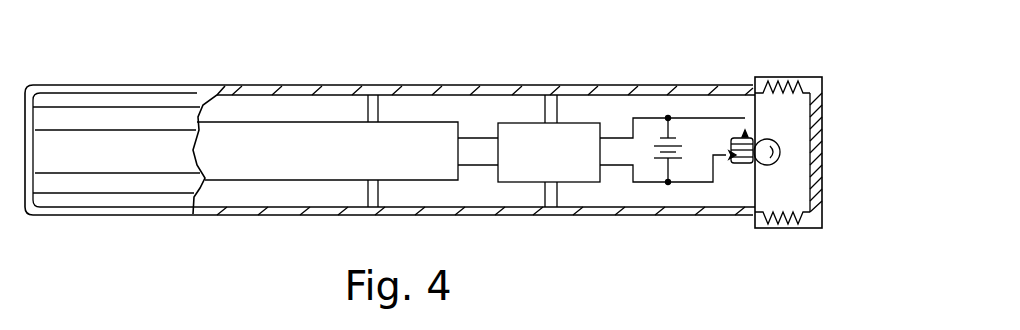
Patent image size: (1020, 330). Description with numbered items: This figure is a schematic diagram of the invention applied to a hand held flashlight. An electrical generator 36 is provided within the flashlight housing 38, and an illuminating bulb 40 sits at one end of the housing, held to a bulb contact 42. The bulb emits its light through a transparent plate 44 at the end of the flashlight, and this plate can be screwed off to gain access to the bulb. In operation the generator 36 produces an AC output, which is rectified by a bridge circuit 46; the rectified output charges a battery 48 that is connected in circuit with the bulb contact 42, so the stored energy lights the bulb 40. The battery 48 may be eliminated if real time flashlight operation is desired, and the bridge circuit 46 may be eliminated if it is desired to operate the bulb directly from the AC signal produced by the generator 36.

The electrical generator 36 is at (278, 118).
The flashlight housing 38 is at (92, 85).
The illuminating bulb 40 is at (778, 147).
The bulb contact 42 is at (745, 165).
The transparent plate 44 is at (822, 124).
The bridge circuit 46 is at (517, 122).
The battery 48 is at (680, 140).